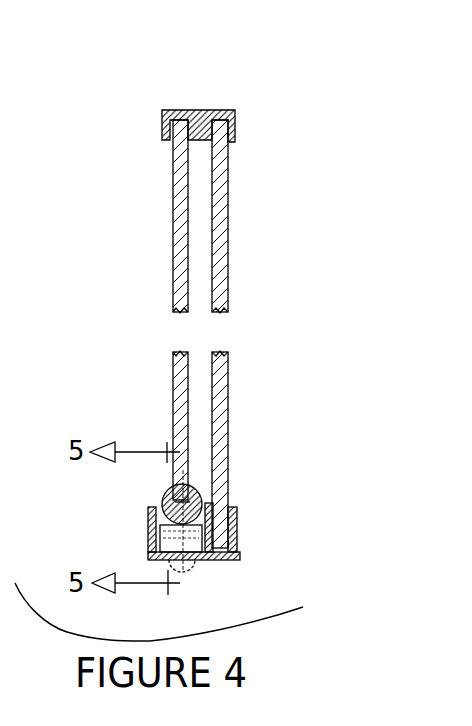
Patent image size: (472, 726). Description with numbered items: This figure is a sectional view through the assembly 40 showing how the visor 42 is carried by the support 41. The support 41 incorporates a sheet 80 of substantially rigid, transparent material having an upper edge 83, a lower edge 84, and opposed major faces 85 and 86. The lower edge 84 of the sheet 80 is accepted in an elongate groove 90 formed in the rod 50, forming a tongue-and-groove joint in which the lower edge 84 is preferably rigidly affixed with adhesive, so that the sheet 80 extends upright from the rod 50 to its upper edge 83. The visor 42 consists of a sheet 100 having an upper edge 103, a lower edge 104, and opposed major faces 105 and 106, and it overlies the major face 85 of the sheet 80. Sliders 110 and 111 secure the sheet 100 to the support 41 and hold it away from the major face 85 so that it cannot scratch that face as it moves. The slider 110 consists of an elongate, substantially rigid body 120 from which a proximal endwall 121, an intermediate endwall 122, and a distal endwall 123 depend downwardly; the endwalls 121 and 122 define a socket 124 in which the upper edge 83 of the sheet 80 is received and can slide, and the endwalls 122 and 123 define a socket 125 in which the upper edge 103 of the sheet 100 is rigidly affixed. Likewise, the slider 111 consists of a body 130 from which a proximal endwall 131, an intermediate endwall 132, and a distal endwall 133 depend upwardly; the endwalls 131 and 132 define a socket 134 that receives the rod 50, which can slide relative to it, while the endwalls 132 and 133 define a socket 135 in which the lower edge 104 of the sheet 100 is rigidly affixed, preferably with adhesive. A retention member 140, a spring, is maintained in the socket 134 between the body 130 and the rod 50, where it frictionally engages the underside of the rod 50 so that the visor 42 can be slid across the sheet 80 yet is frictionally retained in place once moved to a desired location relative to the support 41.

The engagement assembly 40 is at (203, 94).
The support 41 is at (125, 236).
The visor 42 is at (275, 216).
The rod 50 is at (175, 469).
The sheet 80 is at (140, 236).
The upper edge 83 is at (203, 96).
The lower edge 84 is at (202, 469).
The major face 85 is at (262, 216).
The major face 86 is at (175, 175).
The groove 90 is at (183, 498).
The sheet 100 is at (213, 287).
The upper edge 103 is at (203, 96).
The lower edge 104 is at (222, 563).
The major face 105 is at (220, 382).
The major face 106 is at (177, 372).
The slider 110 is at (203, 114).
The slider 111 is at (239, 539).
The body 120 is at (203, 94).
The proximal endwall 121 is at (203, 144).
The intermediate endwall 122 is at (140, 236).
The distal endwall 123 is at (225, 144).
The socket 124 is at (171, 148).
The socket 125 is at (262, 216).
The body 130 is at (149, 569).
The proximal endwall 131 is at (175, 539).
The intermediate endwall 132 is at (239, 539).
The distal endwall 133 is at (239, 539).
The socket 134 is at (185, 539).
The socket 135 is at (239, 539).
The retention member 140 is at (153, 535).